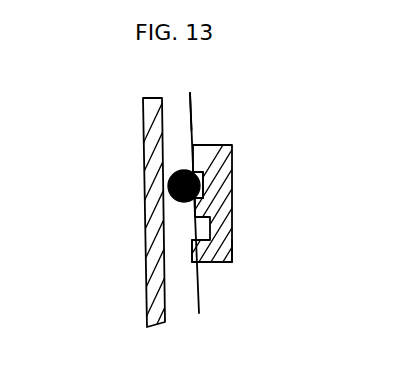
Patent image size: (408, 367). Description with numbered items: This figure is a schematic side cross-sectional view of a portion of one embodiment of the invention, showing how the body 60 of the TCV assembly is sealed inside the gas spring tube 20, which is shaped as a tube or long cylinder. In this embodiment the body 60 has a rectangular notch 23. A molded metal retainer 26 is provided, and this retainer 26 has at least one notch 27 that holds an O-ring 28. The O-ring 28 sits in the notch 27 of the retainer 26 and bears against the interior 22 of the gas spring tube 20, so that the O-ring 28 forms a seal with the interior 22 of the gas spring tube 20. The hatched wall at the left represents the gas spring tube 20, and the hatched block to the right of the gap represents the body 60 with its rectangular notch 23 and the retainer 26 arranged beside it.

The gas spring tube 20 is at (143, 124).
The interior of the gas spring tube 22 is at (168, 303).
The rectangular notch 23 is at (231, 200).
The molded metal retainer 26 is at (227, 243).
The notch 27 is at (197, 195).
The O-ring 28 is at (170, 191).
The body 60 is at (214, 111).